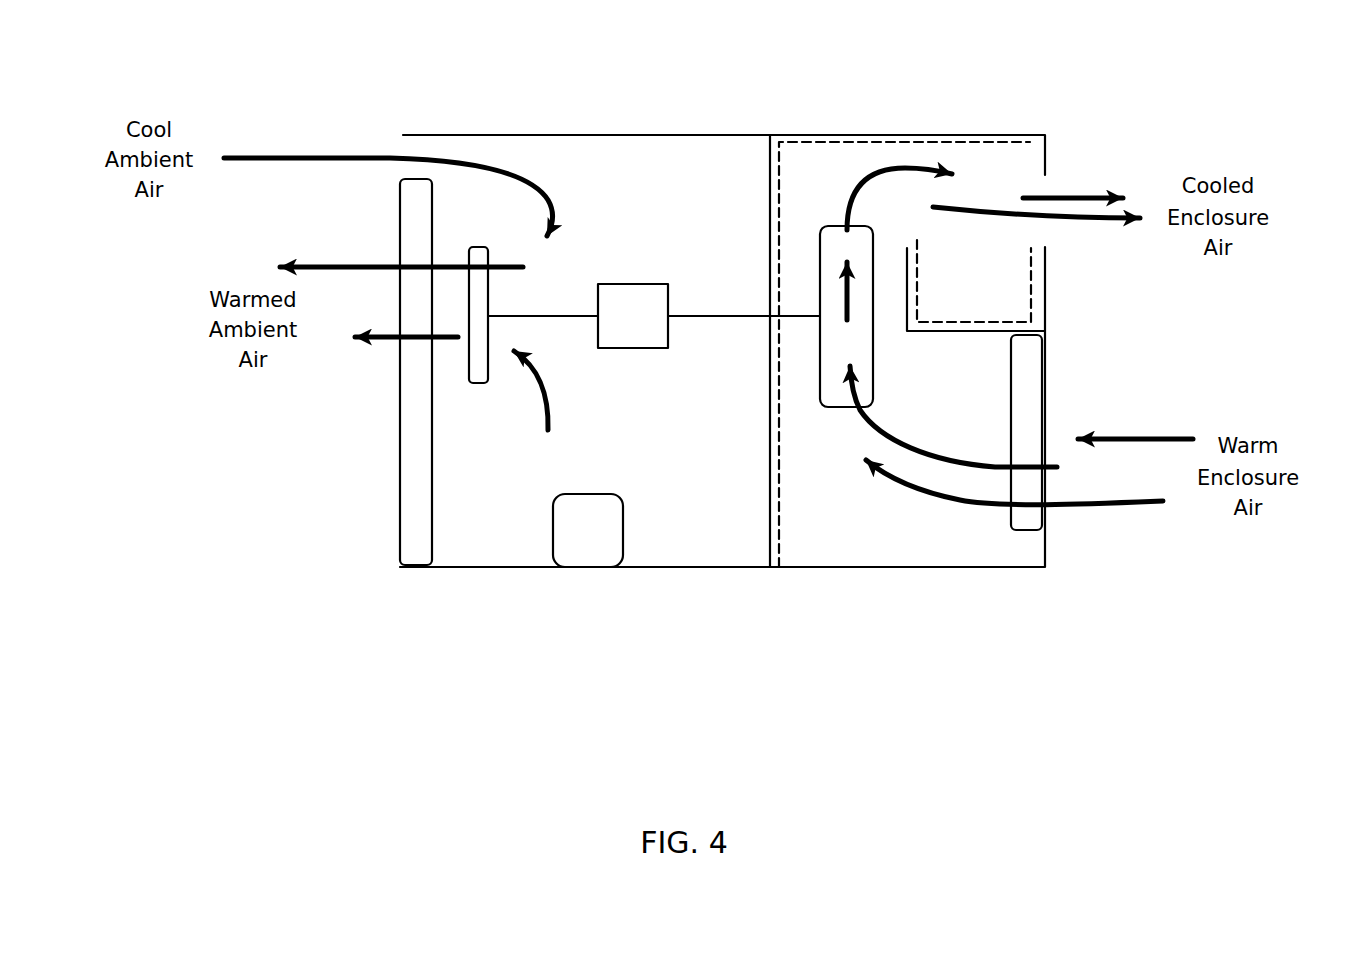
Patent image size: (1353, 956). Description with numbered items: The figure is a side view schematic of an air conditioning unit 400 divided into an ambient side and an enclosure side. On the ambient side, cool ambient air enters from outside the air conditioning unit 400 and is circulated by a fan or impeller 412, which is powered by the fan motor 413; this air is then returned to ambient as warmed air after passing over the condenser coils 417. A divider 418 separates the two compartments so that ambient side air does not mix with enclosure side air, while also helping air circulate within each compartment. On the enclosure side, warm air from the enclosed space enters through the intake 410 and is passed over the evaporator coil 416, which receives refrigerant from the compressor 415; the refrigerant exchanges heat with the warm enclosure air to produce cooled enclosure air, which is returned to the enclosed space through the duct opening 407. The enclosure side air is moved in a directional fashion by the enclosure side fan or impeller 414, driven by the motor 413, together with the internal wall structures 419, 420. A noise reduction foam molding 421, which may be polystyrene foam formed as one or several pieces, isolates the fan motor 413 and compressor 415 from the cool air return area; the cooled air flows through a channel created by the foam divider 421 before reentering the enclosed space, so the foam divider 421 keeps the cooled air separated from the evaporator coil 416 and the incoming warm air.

The air conditioning unit 400 is at (586, 112).
The duct opening 407 is at (1058, 180).
The intake 410 is at (1058, 518).
The fan or impeller 412 is at (477, 303).
The fan motor 413 is at (635, 303).
The enclosure side fan or impeller 414 is at (820, 348).
The compressor 415 is at (618, 522).
The evaporator coil 416 is at (1043, 402).
The condenser coils 417 is at (407, 502).
The divider 418 is at (768, 185).
The internal wall structure 419 is at (933, 331).
The internal wall structure 420 is at (908, 248).
The noise reduction foam molding 421 is at (778, 175).